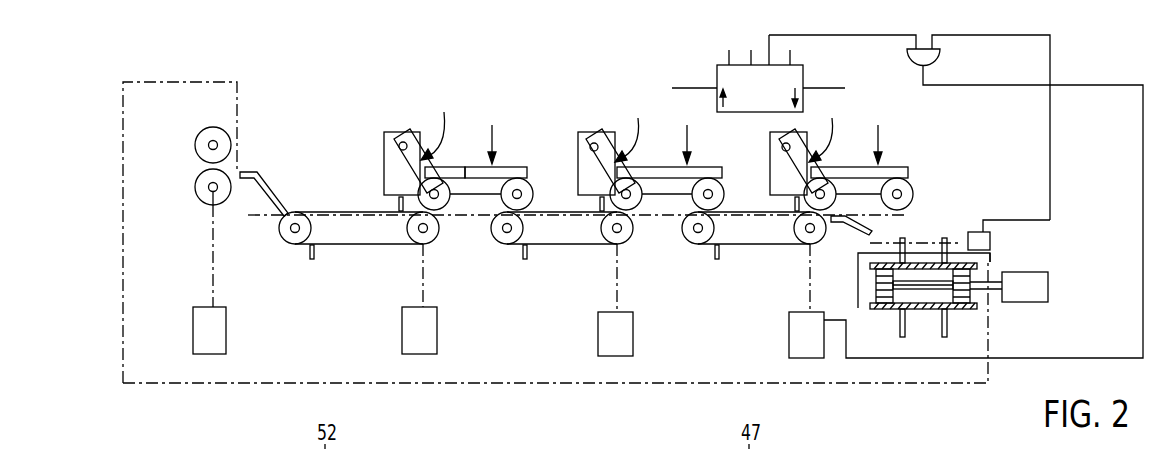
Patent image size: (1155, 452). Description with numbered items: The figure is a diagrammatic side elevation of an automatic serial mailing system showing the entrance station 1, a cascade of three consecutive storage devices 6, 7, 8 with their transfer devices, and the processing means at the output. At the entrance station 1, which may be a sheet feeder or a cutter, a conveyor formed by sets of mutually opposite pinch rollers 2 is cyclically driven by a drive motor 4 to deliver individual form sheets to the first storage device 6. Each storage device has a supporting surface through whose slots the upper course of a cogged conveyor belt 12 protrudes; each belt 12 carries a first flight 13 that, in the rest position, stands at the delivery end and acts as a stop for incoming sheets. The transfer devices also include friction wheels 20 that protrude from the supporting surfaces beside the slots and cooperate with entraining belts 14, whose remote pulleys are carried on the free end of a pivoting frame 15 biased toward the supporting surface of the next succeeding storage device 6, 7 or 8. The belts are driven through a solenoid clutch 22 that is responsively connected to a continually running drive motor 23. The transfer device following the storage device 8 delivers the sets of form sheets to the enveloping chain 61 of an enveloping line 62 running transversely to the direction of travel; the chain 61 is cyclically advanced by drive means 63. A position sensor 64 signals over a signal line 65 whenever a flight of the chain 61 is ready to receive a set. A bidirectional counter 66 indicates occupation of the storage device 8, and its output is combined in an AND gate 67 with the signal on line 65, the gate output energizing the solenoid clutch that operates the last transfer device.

The entrance station 1 is at (140, 137).
The pinch rollers 2 is at (222, 140).
The drive motor 4 is at (203, 338).
The storage device 6 is at (424, 140).
The storage device 7 is at (562, 199).
The storage device 8 is at (756, 199).
The cogged conveyor belt 12 is at (377, 248).
The first flight 13 is at (397, 208).
The entraining belt 14 is at (465, 176).
The pivoting frame 15 is at (516, 168).
The pivot arm 20 is at (397, 137).
The solenoid clutch 22 is at (468, 330).
The drive motor 23 is at (434, 325).
The enveloping chain 61 is at (928, 265).
The enveloping line 62 is at (1002, 255).
The drive means 63 is at (1020, 296).
The position sensor 64 is at (990, 242).
The signal line 65 is at (1053, 150).
The bidirectional counter 66 is at (717, 85).
The AND gate 67 is at (908, 60).